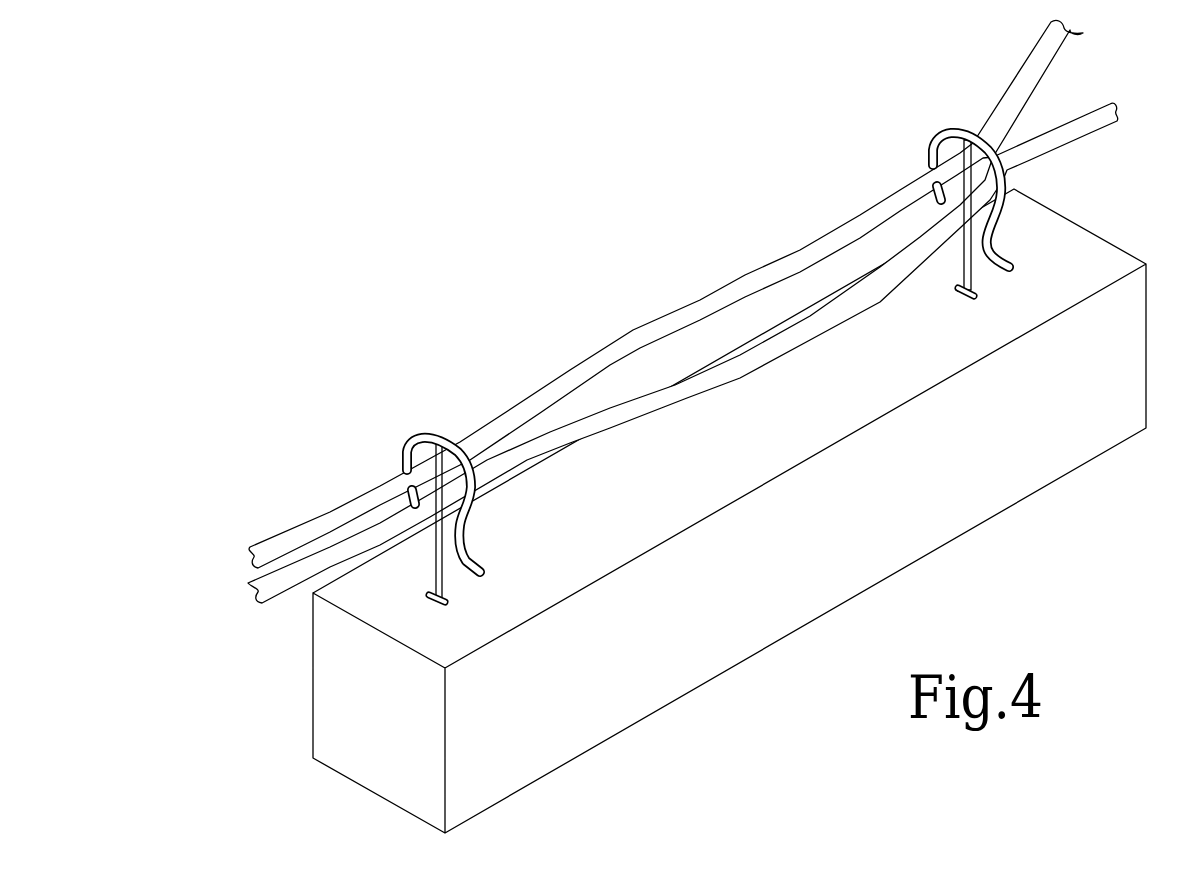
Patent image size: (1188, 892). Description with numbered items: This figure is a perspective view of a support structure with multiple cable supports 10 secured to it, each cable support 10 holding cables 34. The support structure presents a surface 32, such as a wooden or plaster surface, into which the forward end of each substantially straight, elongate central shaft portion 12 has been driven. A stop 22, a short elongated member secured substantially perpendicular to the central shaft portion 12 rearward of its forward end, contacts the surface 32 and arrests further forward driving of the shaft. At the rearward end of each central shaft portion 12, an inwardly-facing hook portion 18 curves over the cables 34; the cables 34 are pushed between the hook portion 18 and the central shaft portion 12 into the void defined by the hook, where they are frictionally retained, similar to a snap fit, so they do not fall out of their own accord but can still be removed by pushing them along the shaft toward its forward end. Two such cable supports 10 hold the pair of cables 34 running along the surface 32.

The cable support 10 is at (714, 381).
The central shaft portion 12 is at (470, 605).
The hook portion 18 is at (402, 462).
The stop 22 is at (438, 604).
The surface 32 is at (373, 603).
The cable 34 is at (628, 332).